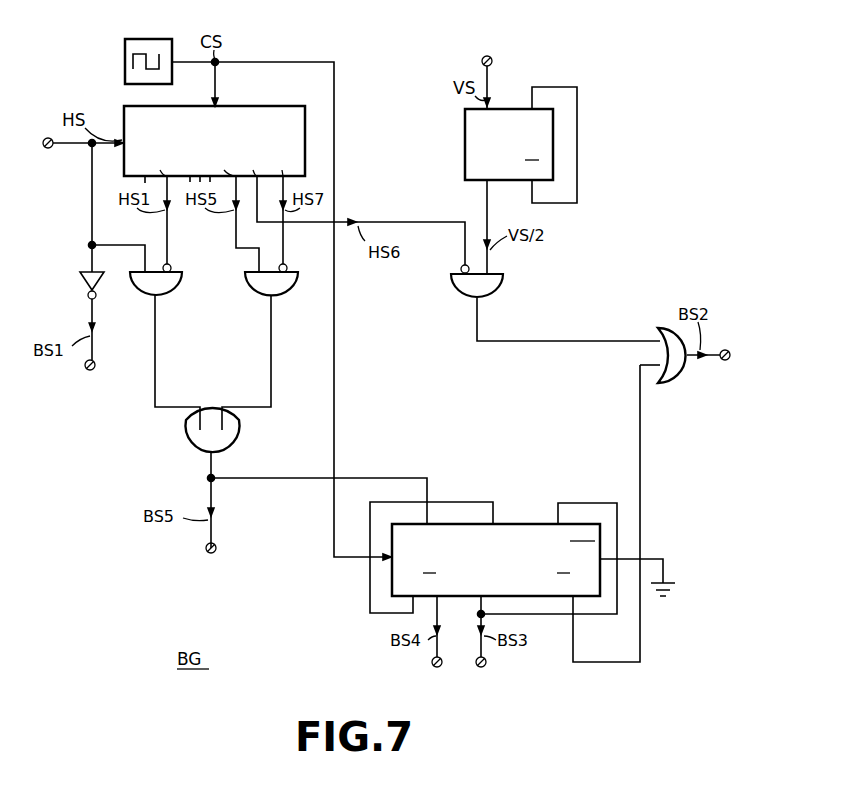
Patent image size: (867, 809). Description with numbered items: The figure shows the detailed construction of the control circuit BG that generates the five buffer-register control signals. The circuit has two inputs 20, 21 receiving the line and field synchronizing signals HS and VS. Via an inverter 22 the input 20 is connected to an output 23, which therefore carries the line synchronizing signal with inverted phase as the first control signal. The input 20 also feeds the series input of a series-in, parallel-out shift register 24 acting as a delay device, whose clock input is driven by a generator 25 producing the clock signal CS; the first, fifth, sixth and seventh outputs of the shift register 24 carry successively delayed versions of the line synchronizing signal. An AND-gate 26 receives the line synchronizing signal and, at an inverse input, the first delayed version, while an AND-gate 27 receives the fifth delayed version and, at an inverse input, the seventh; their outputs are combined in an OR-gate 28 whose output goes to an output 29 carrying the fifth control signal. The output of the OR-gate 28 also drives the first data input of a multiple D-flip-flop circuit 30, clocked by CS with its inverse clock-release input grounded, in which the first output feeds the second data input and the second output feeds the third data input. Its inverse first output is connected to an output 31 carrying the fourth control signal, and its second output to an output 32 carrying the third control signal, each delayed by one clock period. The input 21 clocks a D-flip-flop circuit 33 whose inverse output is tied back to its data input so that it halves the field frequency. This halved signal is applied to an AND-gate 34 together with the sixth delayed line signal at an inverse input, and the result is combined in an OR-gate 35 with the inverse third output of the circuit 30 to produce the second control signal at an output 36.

The input 20 is at (48, 150).
The input 21 is at (492, 60).
The inverter 22 is at (80, 282).
The output 23 is at (84, 366).
The series-in, parallel-out shift register 24 is at (268, 106).
The generator 25 is at (149, 39).
The AND-gate 26 is at (165, 294).
The AND-gate 27 is at (258, 294).
The OR-gate 28 is at (186, 428).
The output 29 is at (204, 548).
The multiple D-flip-flop circuit 30 is at (522, 524).
The output 31 is at (440, 668).
The output 32 is at (484, 668).
The D-flip-flop circuit 33 is at (465, 136).
The AND-gate 34 is at (503, 287).
The OR-gate 35 is at (677, 378).
The output 36 is at (726, 361).